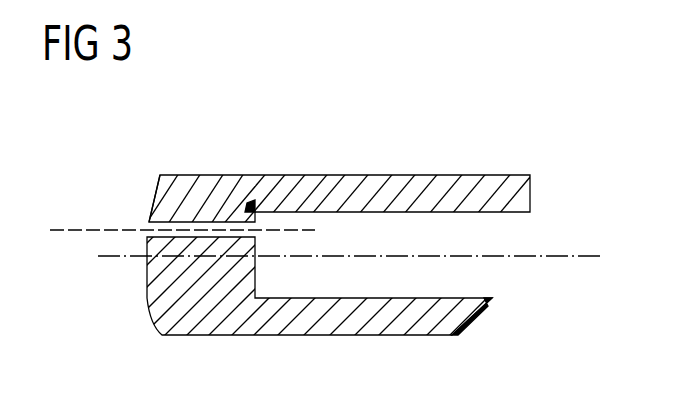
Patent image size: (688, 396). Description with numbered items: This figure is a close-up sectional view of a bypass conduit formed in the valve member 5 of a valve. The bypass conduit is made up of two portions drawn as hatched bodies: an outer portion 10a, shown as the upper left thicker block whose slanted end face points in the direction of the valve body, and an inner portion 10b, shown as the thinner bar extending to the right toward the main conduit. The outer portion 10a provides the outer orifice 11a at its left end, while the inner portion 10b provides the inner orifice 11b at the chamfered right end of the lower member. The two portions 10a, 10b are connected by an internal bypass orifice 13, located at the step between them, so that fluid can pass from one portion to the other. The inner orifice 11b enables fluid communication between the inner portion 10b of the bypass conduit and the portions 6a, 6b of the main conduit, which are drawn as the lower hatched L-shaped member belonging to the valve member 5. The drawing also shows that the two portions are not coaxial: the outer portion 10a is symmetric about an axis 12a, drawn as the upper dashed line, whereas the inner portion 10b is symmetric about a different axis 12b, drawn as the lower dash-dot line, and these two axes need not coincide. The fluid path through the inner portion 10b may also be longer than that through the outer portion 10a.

The valve member 5 is at (289, 166).
The outer portion of bypass conduit 10a is at (217, 214).
The inner portion of bypass conduit 10b is at (373, 228).
The internal bypass orifice 13 is at (248, 203).
The outer orifice 11a is at (131, 214).
The inner orifice 11b is at (533, 291).
The axis 12a is at (64, 232).
The axis 12b is at (590, 255).
The portion of main conduit 6a is at (339, 305).
The portion of main conduit 6b is at (339, 305).